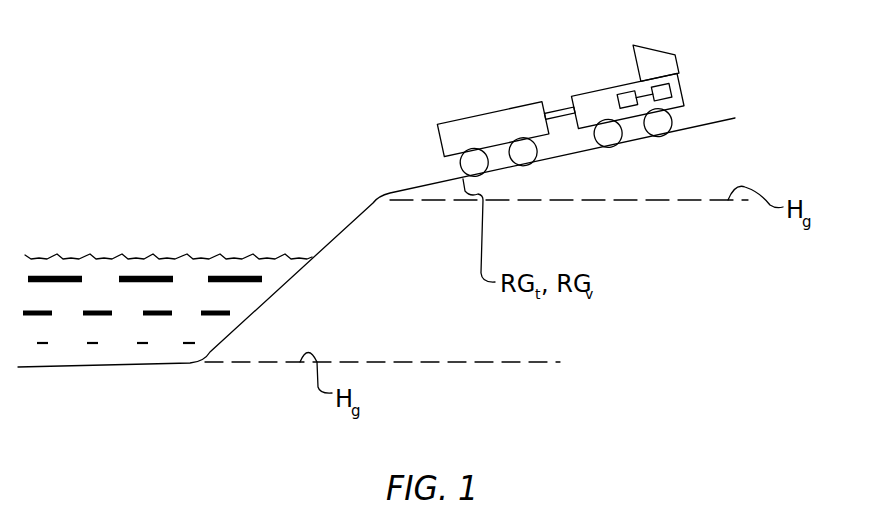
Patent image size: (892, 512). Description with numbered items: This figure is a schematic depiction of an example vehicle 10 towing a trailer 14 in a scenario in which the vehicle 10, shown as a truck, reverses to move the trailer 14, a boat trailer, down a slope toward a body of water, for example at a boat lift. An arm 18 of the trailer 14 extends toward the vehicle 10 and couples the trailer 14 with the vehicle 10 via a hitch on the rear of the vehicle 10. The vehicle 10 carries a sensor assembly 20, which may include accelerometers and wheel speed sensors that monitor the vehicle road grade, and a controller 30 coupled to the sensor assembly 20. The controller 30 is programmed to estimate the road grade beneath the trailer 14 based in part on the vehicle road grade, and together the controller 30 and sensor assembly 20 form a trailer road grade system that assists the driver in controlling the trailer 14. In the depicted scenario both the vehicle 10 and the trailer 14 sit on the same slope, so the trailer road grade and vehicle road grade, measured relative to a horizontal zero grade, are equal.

The vehicle 10 is at (646, 76).
The trailer 14 is at (452, 119).
The arm 18 is at (559, 108).
The sensor assembly 20 is at (625, 93).
The controller 30 is at (671, 89).